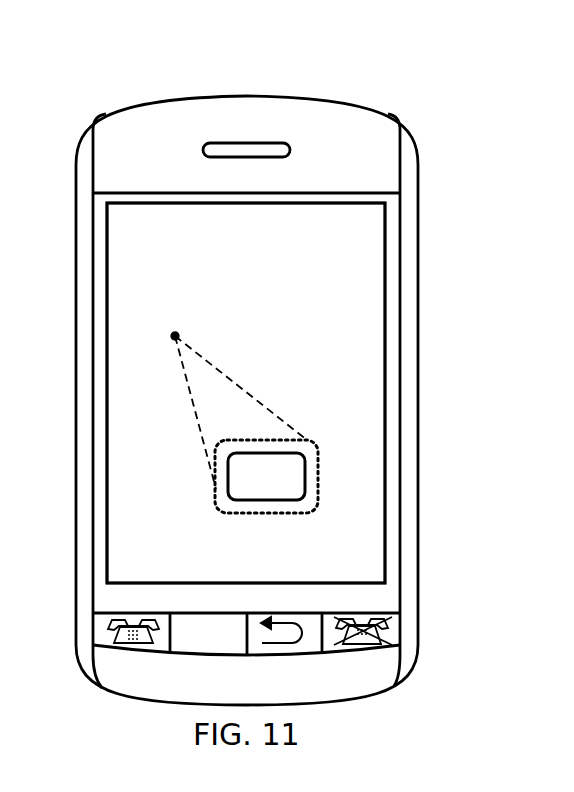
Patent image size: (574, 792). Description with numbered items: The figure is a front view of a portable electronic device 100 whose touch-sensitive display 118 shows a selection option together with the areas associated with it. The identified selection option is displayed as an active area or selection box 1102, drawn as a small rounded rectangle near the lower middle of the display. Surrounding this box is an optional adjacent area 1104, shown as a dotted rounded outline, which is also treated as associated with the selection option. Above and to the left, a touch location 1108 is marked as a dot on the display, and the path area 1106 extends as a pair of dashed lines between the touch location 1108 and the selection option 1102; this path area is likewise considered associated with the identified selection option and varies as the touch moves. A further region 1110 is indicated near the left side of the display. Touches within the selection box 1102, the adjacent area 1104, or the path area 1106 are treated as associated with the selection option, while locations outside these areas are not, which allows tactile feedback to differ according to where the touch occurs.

The portable electronic device 100 is at (409, 129).
The touch-sensitive display 118 is at (377, 247).
The display area 1110 is at (120, 383).
The touch location 1108 is at (178, 331).
The path area 1106 is at (232, 402).
The adjacent area 1104 is at (289, 505).
The selection box 1102 is at (301, 453).